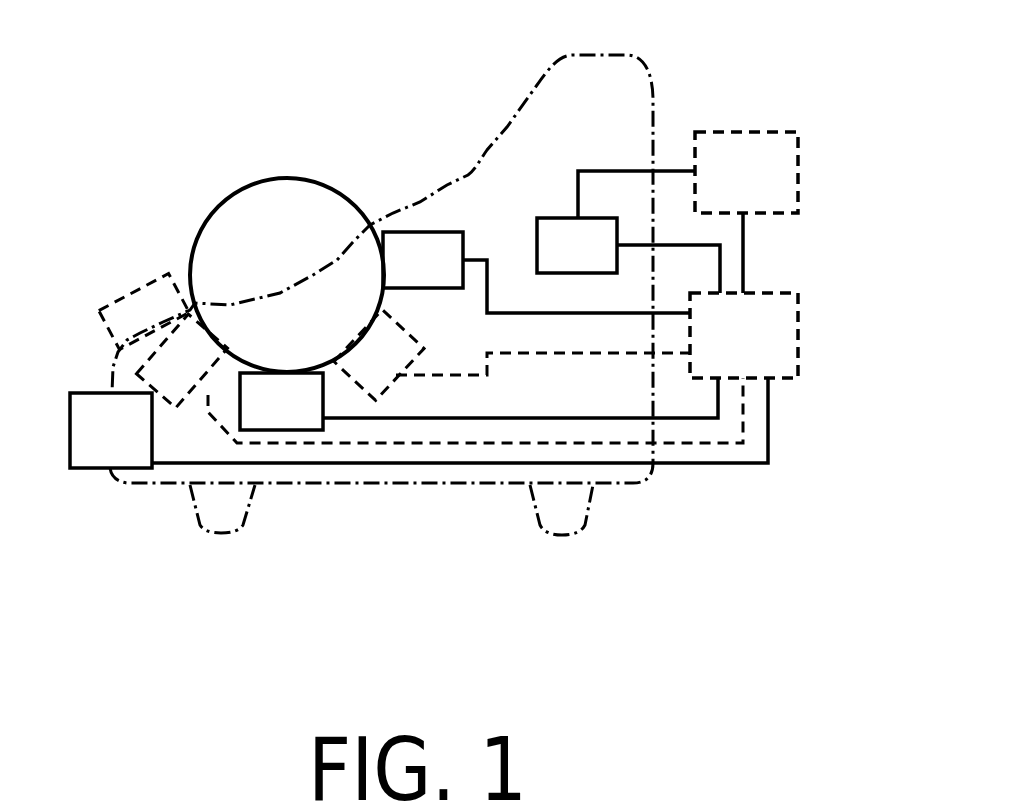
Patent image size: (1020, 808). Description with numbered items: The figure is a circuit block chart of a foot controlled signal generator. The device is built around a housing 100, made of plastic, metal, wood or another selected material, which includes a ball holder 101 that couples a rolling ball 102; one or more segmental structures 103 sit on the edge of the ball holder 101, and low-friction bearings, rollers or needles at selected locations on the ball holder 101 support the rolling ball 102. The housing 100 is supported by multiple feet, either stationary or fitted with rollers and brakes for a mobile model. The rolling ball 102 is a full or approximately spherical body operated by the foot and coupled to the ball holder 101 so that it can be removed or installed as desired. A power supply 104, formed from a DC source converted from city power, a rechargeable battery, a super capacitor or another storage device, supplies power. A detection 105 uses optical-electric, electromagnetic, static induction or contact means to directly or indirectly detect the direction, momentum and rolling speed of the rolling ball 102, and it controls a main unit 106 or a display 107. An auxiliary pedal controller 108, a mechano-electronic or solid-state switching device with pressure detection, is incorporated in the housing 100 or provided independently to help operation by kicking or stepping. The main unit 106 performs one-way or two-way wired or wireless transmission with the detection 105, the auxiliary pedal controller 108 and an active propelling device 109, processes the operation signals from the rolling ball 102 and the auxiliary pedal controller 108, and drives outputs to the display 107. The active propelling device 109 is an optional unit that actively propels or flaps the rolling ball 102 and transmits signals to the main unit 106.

The housing 100 is at (623, 53).
The ball holder 101 is at (237, 358).
The rolling ball 102 is at (237, 192).
The segmental structure 103 is at (295, 288).
The power supply 104 is at (628, 232).
The detection 105 is at (479, 331).
The main unit 106 is at (744, 335).
The display 107 is at (746, 212).
The auxiliary pedal controller 108 is at (142, 302).
The active propelling device 109 is at (439, 376).